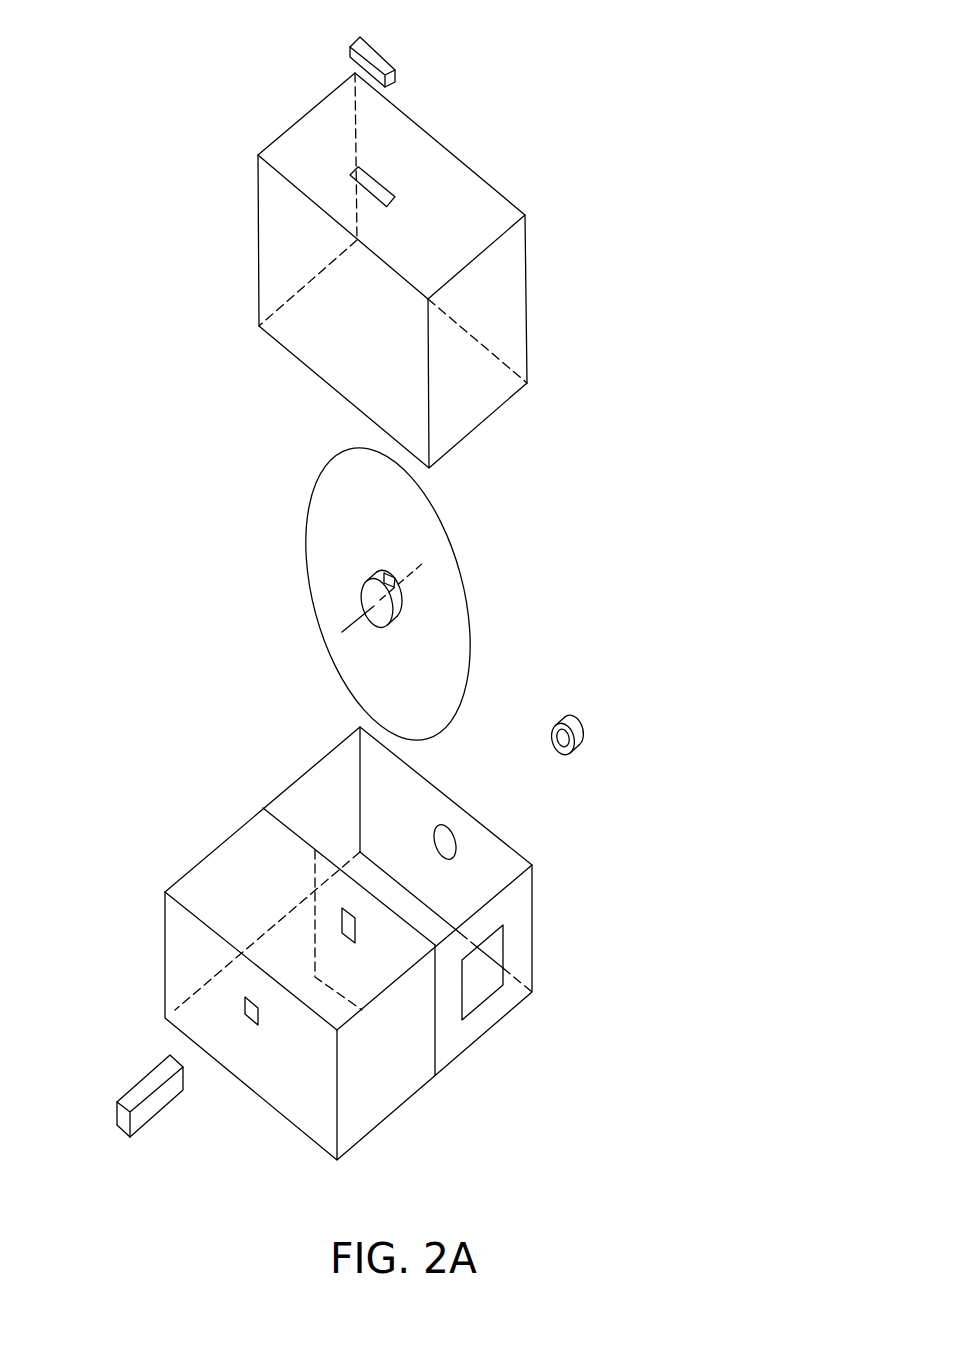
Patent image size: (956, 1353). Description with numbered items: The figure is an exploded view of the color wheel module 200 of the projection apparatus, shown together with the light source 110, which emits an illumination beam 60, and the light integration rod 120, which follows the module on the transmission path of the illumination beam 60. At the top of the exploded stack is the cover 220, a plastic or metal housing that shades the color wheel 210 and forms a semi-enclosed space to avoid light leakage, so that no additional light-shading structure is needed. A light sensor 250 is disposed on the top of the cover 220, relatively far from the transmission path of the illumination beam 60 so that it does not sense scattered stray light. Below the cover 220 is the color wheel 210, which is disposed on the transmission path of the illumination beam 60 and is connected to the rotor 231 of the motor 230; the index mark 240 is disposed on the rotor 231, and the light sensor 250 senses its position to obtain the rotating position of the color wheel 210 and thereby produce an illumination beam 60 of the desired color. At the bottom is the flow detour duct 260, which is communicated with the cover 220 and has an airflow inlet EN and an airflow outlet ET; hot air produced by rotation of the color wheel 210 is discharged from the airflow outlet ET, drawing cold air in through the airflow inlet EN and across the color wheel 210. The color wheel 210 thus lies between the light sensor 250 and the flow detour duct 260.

The color wheel module 200 is at (593, 70).
The light sensor 250 is at (397, 74).
The cover 220 is at (526, 300).
The color wheel 210 is at (315, 612).
The motor 230 is at (358, 572).
The rotor 231 is at (400, 607).
The index mark 240 is at (393, 577).
The light source 110 is at (580, 733).
The illumination beam 60 is at (493, 800).
The flow detour duct 260 is at (292, 1108).
The airflow inlet EN is at (352, 1075).
The airflow outlet ET is at (468, 985).
The light integration rod 120 is at (141, 1091).